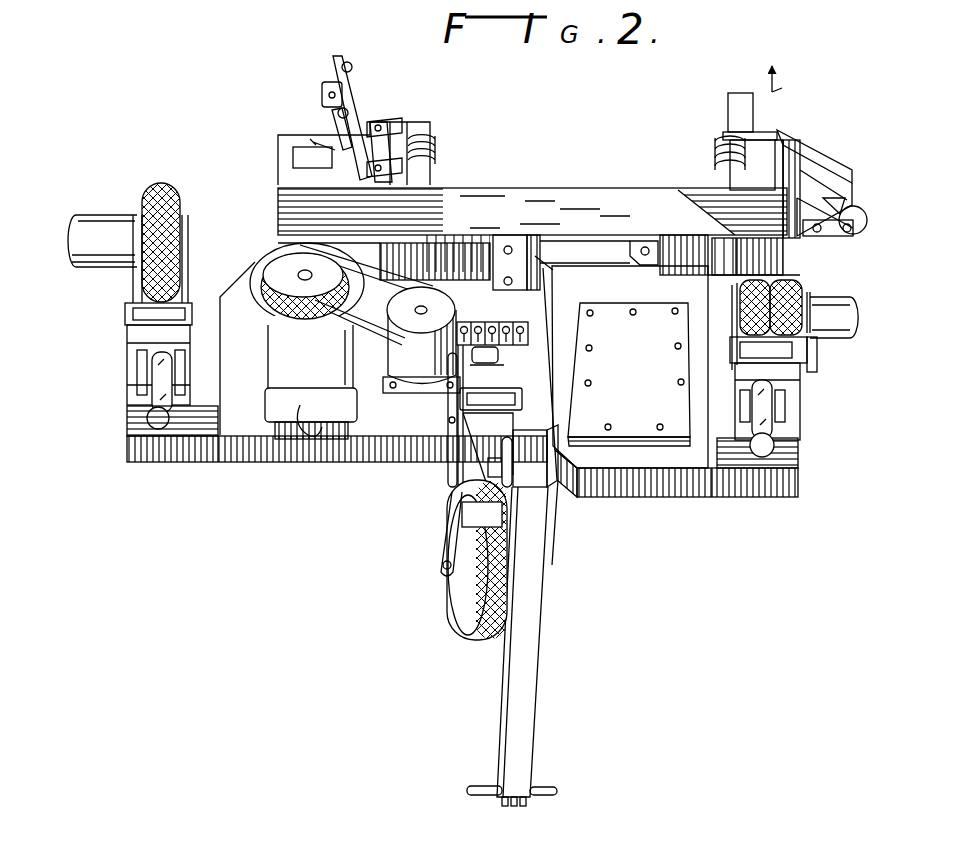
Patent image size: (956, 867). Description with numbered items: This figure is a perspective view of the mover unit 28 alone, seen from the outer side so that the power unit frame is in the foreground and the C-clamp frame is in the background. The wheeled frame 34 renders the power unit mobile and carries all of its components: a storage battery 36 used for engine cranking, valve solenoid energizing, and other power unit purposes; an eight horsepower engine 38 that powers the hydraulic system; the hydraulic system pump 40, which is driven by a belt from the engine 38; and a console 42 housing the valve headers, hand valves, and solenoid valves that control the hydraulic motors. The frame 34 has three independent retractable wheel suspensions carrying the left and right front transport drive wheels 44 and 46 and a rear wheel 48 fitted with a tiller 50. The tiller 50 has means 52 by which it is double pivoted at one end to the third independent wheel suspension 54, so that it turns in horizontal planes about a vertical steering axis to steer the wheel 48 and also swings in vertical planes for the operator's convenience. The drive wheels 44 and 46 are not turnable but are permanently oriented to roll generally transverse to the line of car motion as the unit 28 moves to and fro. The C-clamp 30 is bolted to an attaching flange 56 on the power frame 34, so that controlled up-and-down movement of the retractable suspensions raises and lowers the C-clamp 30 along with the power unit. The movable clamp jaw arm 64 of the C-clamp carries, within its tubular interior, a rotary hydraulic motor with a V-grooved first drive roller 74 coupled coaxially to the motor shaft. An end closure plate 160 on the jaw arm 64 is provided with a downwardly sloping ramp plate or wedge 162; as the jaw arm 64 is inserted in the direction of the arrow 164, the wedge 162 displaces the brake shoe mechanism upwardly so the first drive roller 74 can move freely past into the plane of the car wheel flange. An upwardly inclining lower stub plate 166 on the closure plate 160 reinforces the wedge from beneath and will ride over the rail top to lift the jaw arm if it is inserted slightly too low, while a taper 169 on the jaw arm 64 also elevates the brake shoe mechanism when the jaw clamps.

The unit 28 is at (757, 507).
The C-clamp 30 is at (414, 114).
The wheeled frame 34 is at (237, 454).
The storage battery 36 is at (357, 247).
The engine 38 is at (255, 308).
The hydraulic system pump 40 is at (423, 368).
The console 42 is at (477, 318).
The left front transport drive wheel 44 is at (173, 188).
The right front transport drive wheel 46 is at (790, 290).
The rear wheel 48 is at (460, 622).
The tiller 50 is at (523, 675).
The double pivot means 52 is at (463, 503).
The third independent wheel suspension 54 is at (443, 452).
The attaching flange 56 is at (653, 250).
The movable clamp jaw arm 64 is at (763, 156).
The first drive roller 74 is at (726, 160).
The end closure plate 160 is at (760, 137).
The ramp plate or wedge 162 is at (735, 100).
The insertion direction arrow 164 is at (807, 82).
The lower stub plate 166 is at (728, 130).
The taper 169 is at (715, 150).